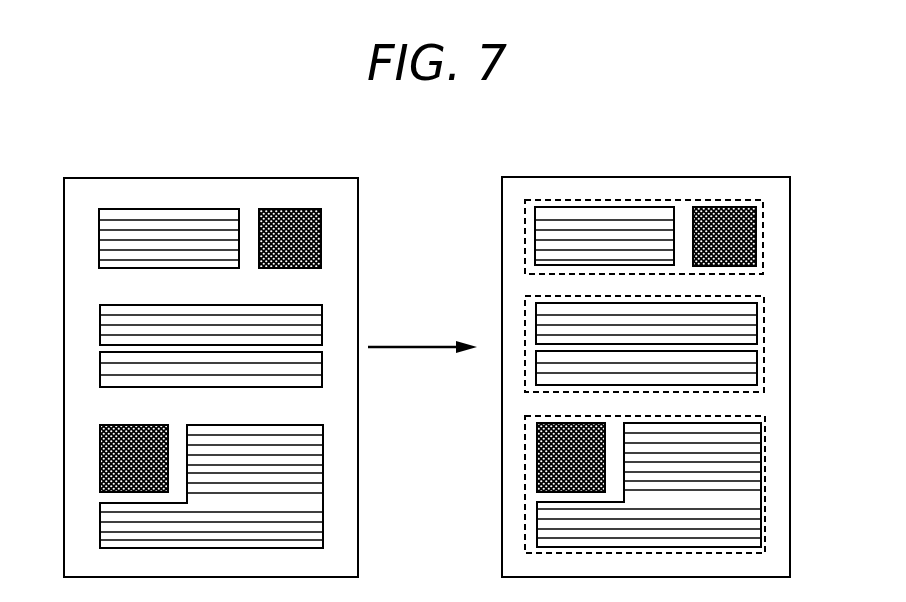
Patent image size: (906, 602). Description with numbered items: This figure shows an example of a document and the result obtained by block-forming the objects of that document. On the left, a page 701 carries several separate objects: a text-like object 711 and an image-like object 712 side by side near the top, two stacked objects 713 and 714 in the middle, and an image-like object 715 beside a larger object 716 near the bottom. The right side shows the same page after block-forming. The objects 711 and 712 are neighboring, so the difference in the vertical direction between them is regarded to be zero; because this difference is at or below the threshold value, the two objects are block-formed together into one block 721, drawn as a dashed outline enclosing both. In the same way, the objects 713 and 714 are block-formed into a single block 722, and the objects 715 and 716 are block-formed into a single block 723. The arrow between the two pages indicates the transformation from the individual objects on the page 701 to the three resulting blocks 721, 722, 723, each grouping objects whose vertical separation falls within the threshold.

The page 701 is at (288, 178).
The object 711 is at (170, 223).
The object 712 is at (321, 229).
The object 713 is at (313, 318).
The object 714 is at (313, 375).
The object 715 is at (145, 425).
The object 716 is at (312, 494).
The block 721 is at (764, 232).
The block 722 is at (764, 344).
The block 723 is at (765, 494).